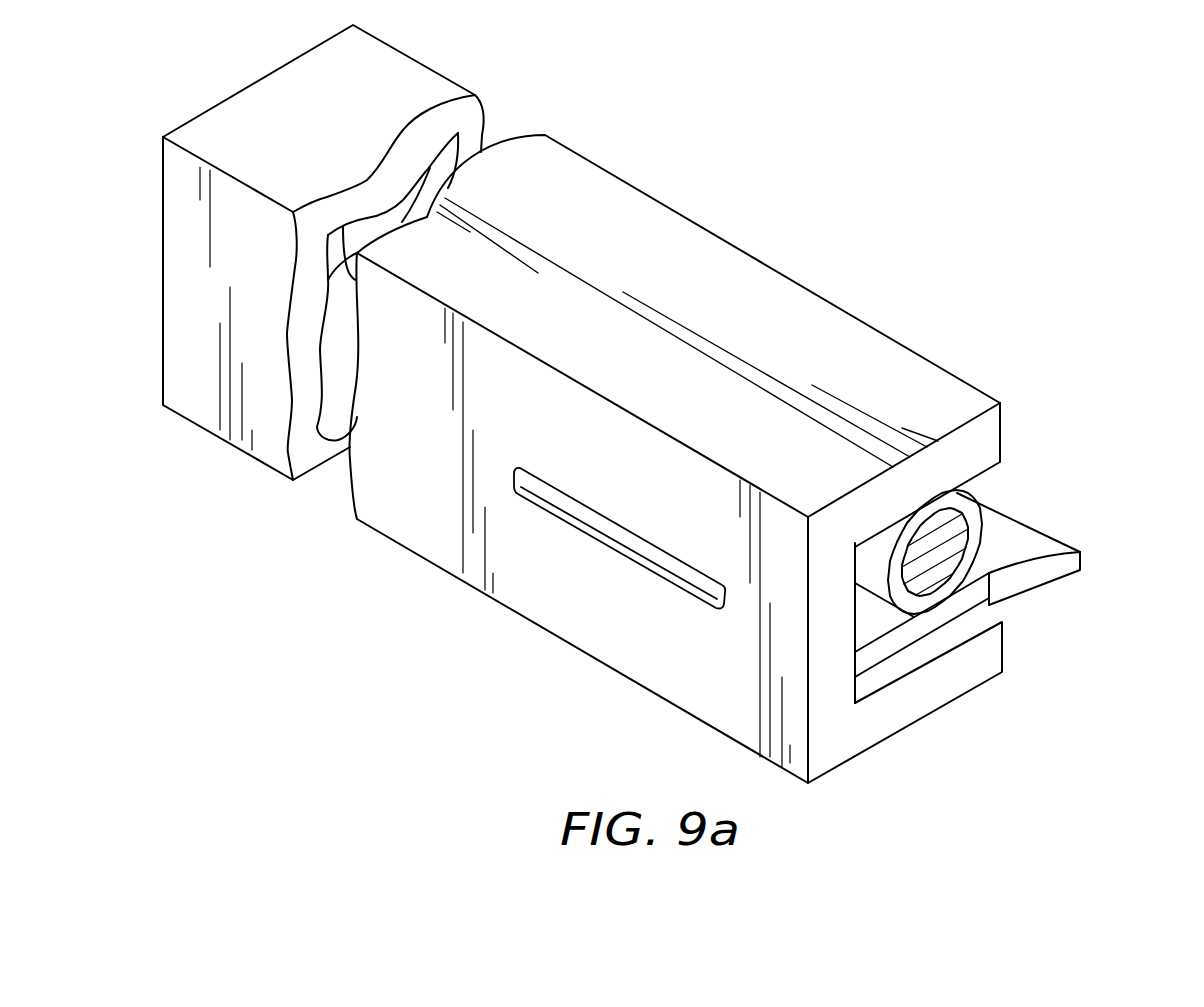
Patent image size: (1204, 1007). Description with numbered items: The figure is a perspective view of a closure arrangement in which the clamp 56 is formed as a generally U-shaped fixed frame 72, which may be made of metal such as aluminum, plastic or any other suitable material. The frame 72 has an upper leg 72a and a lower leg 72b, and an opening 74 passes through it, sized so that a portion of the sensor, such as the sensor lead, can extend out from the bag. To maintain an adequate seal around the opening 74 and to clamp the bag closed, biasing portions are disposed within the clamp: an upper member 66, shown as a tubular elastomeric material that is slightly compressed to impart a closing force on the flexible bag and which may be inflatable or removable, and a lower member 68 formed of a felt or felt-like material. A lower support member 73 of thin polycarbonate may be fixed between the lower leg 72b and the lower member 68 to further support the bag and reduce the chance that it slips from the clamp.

The clamp 56 is at (893, 200).
The fixed frame 72 is at (882, 331).
The upper leg 72a is at (968, 382).
The lower leg 72b is at (970, 693).
The upper member 66 is at (985, 505).
The lower member 68 is at (992, 572).
The lower support member 73 is at (1078, 570).
The opening 74 is at (640, 567).